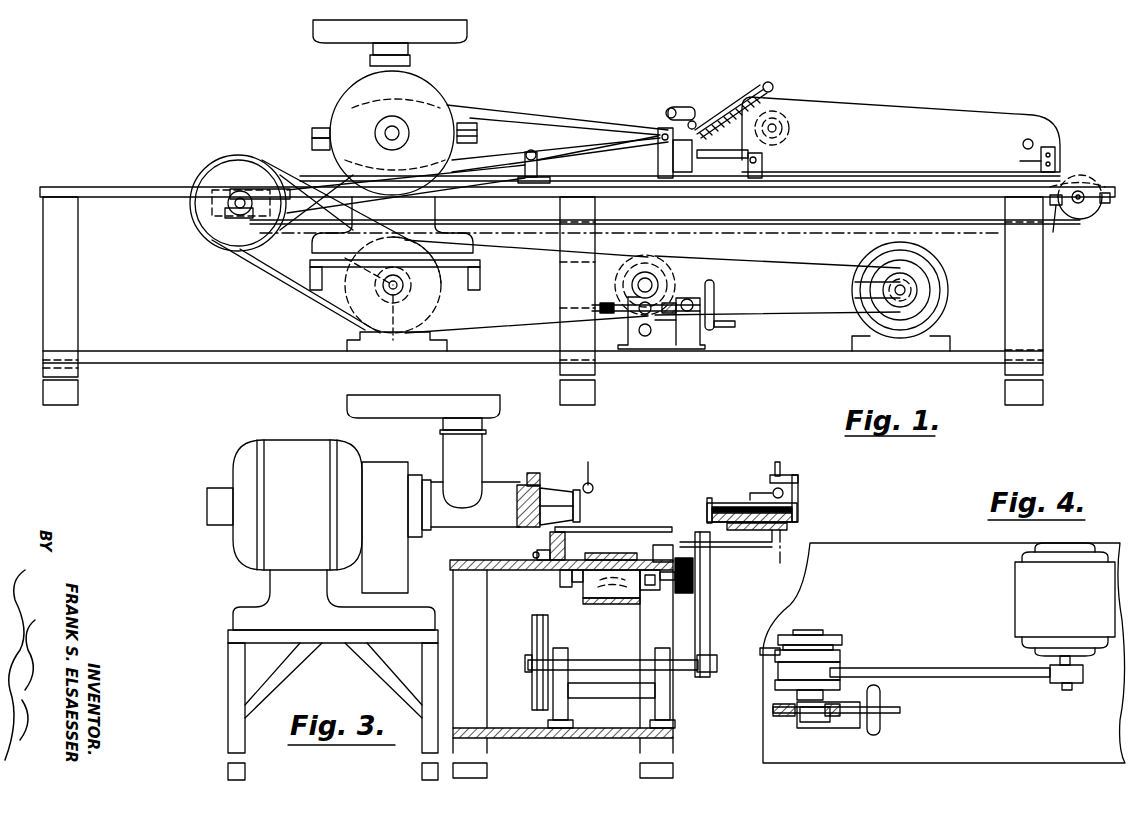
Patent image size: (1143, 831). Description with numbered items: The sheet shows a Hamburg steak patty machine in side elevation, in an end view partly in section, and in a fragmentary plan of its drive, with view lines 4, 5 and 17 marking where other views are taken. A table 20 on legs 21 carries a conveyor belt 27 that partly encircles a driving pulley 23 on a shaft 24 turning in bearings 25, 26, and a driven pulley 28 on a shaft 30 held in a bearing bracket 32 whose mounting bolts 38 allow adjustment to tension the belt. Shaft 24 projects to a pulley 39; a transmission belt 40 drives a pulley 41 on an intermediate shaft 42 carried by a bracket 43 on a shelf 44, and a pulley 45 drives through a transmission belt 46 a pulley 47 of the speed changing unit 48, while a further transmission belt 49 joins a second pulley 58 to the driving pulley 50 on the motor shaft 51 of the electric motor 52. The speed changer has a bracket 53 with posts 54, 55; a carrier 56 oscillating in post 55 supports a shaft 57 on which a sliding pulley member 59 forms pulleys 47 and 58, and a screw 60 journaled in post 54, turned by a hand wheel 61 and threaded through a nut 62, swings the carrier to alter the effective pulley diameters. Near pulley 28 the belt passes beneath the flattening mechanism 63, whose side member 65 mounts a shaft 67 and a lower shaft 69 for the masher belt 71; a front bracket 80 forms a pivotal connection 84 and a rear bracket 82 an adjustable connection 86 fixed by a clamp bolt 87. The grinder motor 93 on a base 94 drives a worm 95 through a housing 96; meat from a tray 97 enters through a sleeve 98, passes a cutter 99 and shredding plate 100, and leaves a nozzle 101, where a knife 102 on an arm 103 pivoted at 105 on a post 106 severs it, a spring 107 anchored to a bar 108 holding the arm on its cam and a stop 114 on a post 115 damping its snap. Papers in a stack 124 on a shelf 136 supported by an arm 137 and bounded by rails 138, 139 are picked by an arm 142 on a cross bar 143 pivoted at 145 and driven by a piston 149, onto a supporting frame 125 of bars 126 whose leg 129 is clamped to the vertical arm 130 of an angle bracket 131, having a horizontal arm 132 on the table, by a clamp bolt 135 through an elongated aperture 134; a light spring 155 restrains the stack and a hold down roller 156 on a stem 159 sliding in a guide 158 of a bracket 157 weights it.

In FIG. 1, the view line 4— 4 is at (613, 238).
In FIG. 3, the section line 5 is at (778, 452).
In FIG. 4, the section line 17 is at (808, 615).
In FIG. 1, the table member 20 is at (180, 187).
In FIG. 3, the table member 20 is at (500, 570).
In FIG. 1, the legs 21 is at (74, 298).
In FIG. 3, the legs 21 is at (480, 678).
In FIG. 1, the drum or pulley 23 is at (258, 222).
In FIG. 3, the drum or pulley 23 is at (636, 592).
In FIG. 1, the shaft 24 is at (222, 230).
In FIG. 3, the shaft 24 is at (590, 590).
In FIG. 3, the bearing 25 is at (688, 532).
In FIG. 1, the bearing 26 is at (208, 178).
In FIG. 3, the bearing 26 is at (572, 584).
In FIG. 1, the conveyor belt 27 is at (775, 208).
In FIG. 3, the conveyor belt 27 is at (612, 606).
In FIG. 1, the second drum or pulley 28 is at (1088, 218).
In FIG. 1, the shaft 30 is at (1096, 206).
In FIG. 1, the bearing bracket 32 is at (1111, 197).
In FIG. 1, the mounting bolts 38 is at (1054, 210).
In FIG. 1, the pulley 39 is at (205, 215).
In FIG. 3, the pulley 39 is at (710, 610).
In FIG. 1, the transmission belt 40 is at (268, 258).
In FIG. 3, the transmission belt 40 is at (705, 636).
In FIG. 1, the pulley 41 is at (350, 282).
In FIG. 3, the pulley 41 is at (710, 672).
In FIG. 1, the intermediate shaft 42 is at (403, 286).
In FIG. 3, the intermediate shaft 42 is at (615, 658).
In FIG. 1, the bracket 43 is at (393, 350).
In FIG. 3, the bracket 43 is at (592, 694).
In FIG. 1, the shelf 44 is at (277, 352).
In FIG. 4, the shelf 44 is at (935, 543).
In FIG. 1, the pulley 45 is at (432, 298).
In FIG. 3, the pulley 45 is at (532, 636).
In FIG. 1, the transmission belt 46 is at (518, 253).
In FIG. 3, the transmission belt 46 is at (538, 706).
In FIG. 4, the pulley 47 is at (848, 615).
In FIG. 1, the speed changing unit 48 is at (734, 339).
In FIG. 4, the speed changing unit 48 is at (932, 740).
In FIG. 1, the transmission belt 49 is at (822, 256).
In FIG. 4, the transmission belt 49 is at (975, 657).
In FIG. 1, the driving pulley 50 is at (916, 293).
In FIG. 4, the driving pulley 50 is at (1055, 684).
In FIG. 1, the motor shaft 51 is at (880, 292).
In FIG. 4, the motor shaft 51 is at (1068, 690).
In FIG. 1, the electric motor 52 is at (940, 285).
In FIG. 4, the electric motor 52 is at (1020, 600).
In FIG. 1, the bracket 53 is at (660, 350).
In FIG. 4, the bracket 53 is at (836, 730).
In FIG. 1, the post 54 is at (694, 330).
In FIG. 4, the post 54 is at (805, 632).
In FIG. 1, the post 55 is at (639, 329).
In FIG. 1, the carrier 56 is at (620, 316).
In FIG. 4, the carrier 56 is at (830, 720).
In FIG. 1, the shaft 57 is at (660, 288).
In FIG. 4, the shaft 57 is at (800, 730).
In FIG. 1, the second pulley 58 is at (650, 256).
In FIG. 4, the second pulley 58 is at (845, 682).
In FIG. 4, the sliding pulley member 59 is at (840, 662).
In FIG. 1, the screw 60 is at (606, 304).
In FIG. 4, the screw 60 is at (782, 718).
In FIG. 1, the hand wheel 61 is at (715, 283).
In FIG. 4, the hand wheel 61 is at (881, 728).
In FIG. 1, the nut 62 is at (688, 298).
In FIG. 1, the mashing or flattening mechanism 63 is at (1046, 100).
In FIG. 1, the side member 65 is at (944, 112).
In FIG. 1, the shaft 67 is at (784, 126).
In FIG. 1, the shaft 69 is at (1026, 140).
In FIG. 3, the belt 71 is at (693, 562).
In FIG. 1, the bracket 80 is at (762, 163).
In FIG. 1, the bracket 82 is at (1060, 170).
In FIG. 1, the pivotal connection 84 is at (765, 156).
In FIG. 1, the adjustable connection 86 is at (1055, 148).
In FIG. 1, the clamp bolt 87 is at (1030, 161).
In FIG. 1, the motor 93 is at (338, 104).
In FIG. 3, the motor 93 is at (292, 440).
In FIG. 1, the base 94 is at (472, 243).
In FIG. 3, the base 94 is at (235, 618).
In FIG. 3, the worm feed 95 is at (518, 486).
In FIG. 3, the housing 96 is at (400, 561).
In FIG. 1, the tray 97 is at (467, 30).
In FIG. 3, the tray 97 is at (500, 406).
In FIG. 1, the funnel or sleeve 98 is at (410, 61).
In FIG. 3, the funnel or sleeve 98 is at (482, 442).
In FIG. 3, the cutter 99 is at (538, 474).
In FIG. 3, the shredding plate 100 is at (556, 490).
In FIG. 3, the nozzle 101 is at (582, 504).
In FIG. 1, the knife 102 is at (428, 96).
In FIG. 3, the knife 102 is at (590, 466).
In FIG. 1, the arm 103 is at (515, 118).
In FIG. 1, the pivot 105 is at (660, 128).
In FIG. 1, the post or bracket 106 is at (664, 178).
In FIG. 1, the spring 107 is at (745, 100).
In FIG. 1, the bar 108 is at (772, 84).
In FIG. 1, the stop 114 is at (525, 158).
In FIG. 1, the post 115 is at (528, 183).
In FIG. 1, the stack 124 is at (314, 128).
In FIG. 3, the stack 124 is at (738, 497).
In FIG. 3, the supporting frame 125 is at (665, 545).
In FIG. 3, the bars 126 is at (638, 533).
In FIG. 3, the depending leg 129 is at (565, 533).
In FIG. 3, the vertical arm 130 is at (550, 542).
In FIG. 3, the angle bracket 131 is at (558, 574).
In FIG. 3, the horizontal arm 132 is at (537, 556).
In FIG. 3, the elongated aperture 134 is at (534, 553).
In FIG. 3, the clamp bolt 135 is at (612, 552).
In FIG. 1, the shelf 136 is at (312, 146).
In FIG. 3, the shelf 136 is at (788, 527).
In FIG. 3, the arm 137 is at (744, 548).
In FIG. 3, the rail 138 is at (796, 506).
In FIG. 3, the second rail 139 is at (752, 492).
In FIG. 1, the arm 142 is at (592, 117).
In FIG. 1, the cross member 143 is at (672, 107).
In FIG. 1, the pivot 145 is at (692, 120).
In FIG. 1, the piston 149 is at (726, 106).
In FIG. 3, the light spring 155 is at (707, 500).
In FIG. 3, the hold down roller 156 is at (772, 490).
In FIG. 3, the bracket 157 is at (798, 490).
In FIG. 3, the guide 158 is at (786, 476).
In FIG. 3, the stem 159 is at (782, 463).